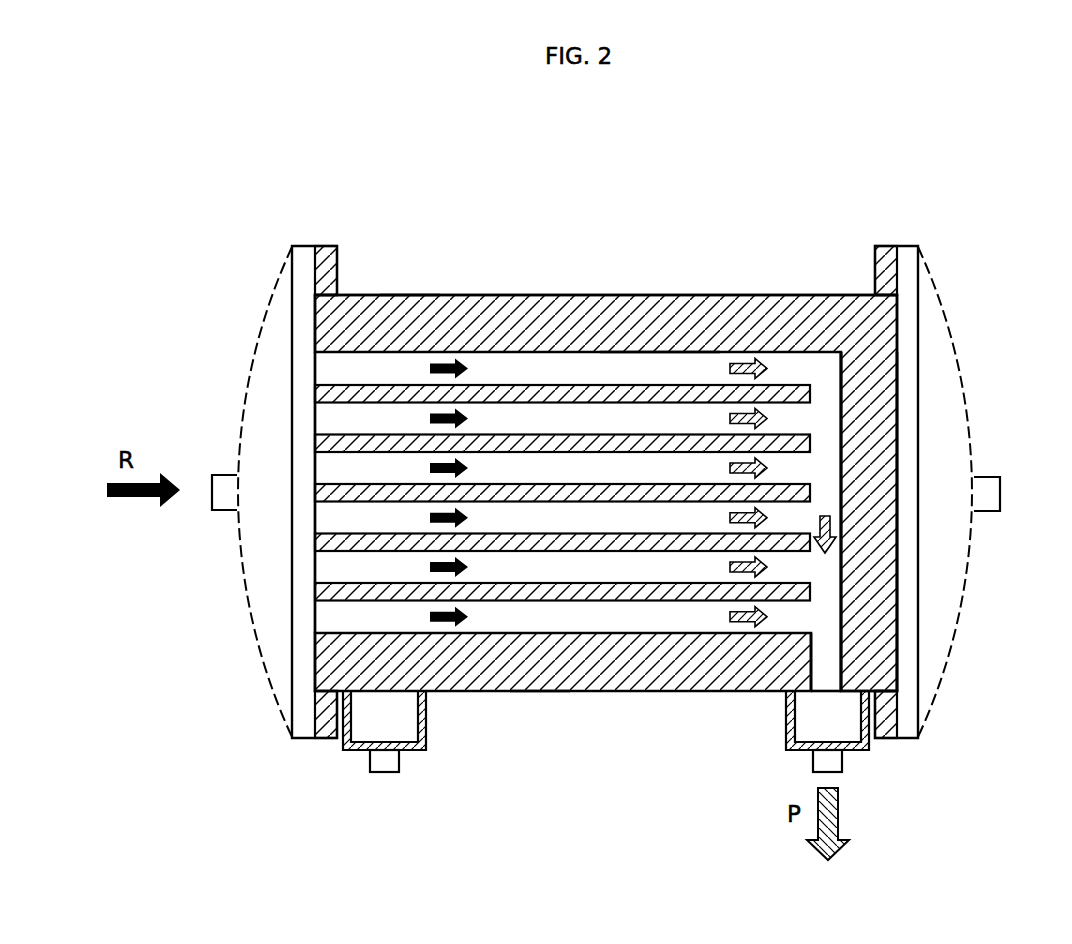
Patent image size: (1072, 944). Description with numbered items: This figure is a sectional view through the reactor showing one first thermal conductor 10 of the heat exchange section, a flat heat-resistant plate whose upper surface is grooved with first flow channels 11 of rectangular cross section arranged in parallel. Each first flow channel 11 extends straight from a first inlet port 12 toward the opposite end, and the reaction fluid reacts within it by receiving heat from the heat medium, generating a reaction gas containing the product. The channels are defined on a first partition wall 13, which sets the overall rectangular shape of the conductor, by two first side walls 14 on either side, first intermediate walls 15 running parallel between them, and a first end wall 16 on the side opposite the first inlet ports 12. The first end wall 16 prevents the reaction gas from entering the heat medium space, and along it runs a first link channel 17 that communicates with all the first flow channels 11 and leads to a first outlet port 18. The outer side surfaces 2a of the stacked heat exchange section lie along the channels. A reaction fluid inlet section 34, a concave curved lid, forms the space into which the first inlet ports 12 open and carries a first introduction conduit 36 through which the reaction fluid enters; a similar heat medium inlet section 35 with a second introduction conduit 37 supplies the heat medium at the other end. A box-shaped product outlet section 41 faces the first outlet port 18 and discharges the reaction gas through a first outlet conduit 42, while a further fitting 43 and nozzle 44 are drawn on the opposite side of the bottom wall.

The side surface 2a is at (410, 295).
The first thermal conductor 10 is at (638, 497).
The first flow channel 11 is at (397, 380).
The first inlet port 12 is at (315, 368).
The first partition wall 13 is at (663, 368).
The first side wall 14 is at (492, 308).
The first intermediate wall 15 is at (521, 392).
The first end wall 16 is at (872, 440).
The first link channel 17 is at (823, 487).
The first outlet port 18 is at (843, 633).
The reaction fluid inlet section 34 is at (270, 347).
The heat medium inlet section 35 is at (942, 352).
The first introduction conduit 36 is at (222, 477).
The second introduction conduit 37 is at (974, 477).
The product outlet section 41 is at (786, 722).
The first outlet conduit 42 is at (813, 762).
The drain fitting 43 is at (427, 725).
The drain nozzle 44 is at (399, 762).